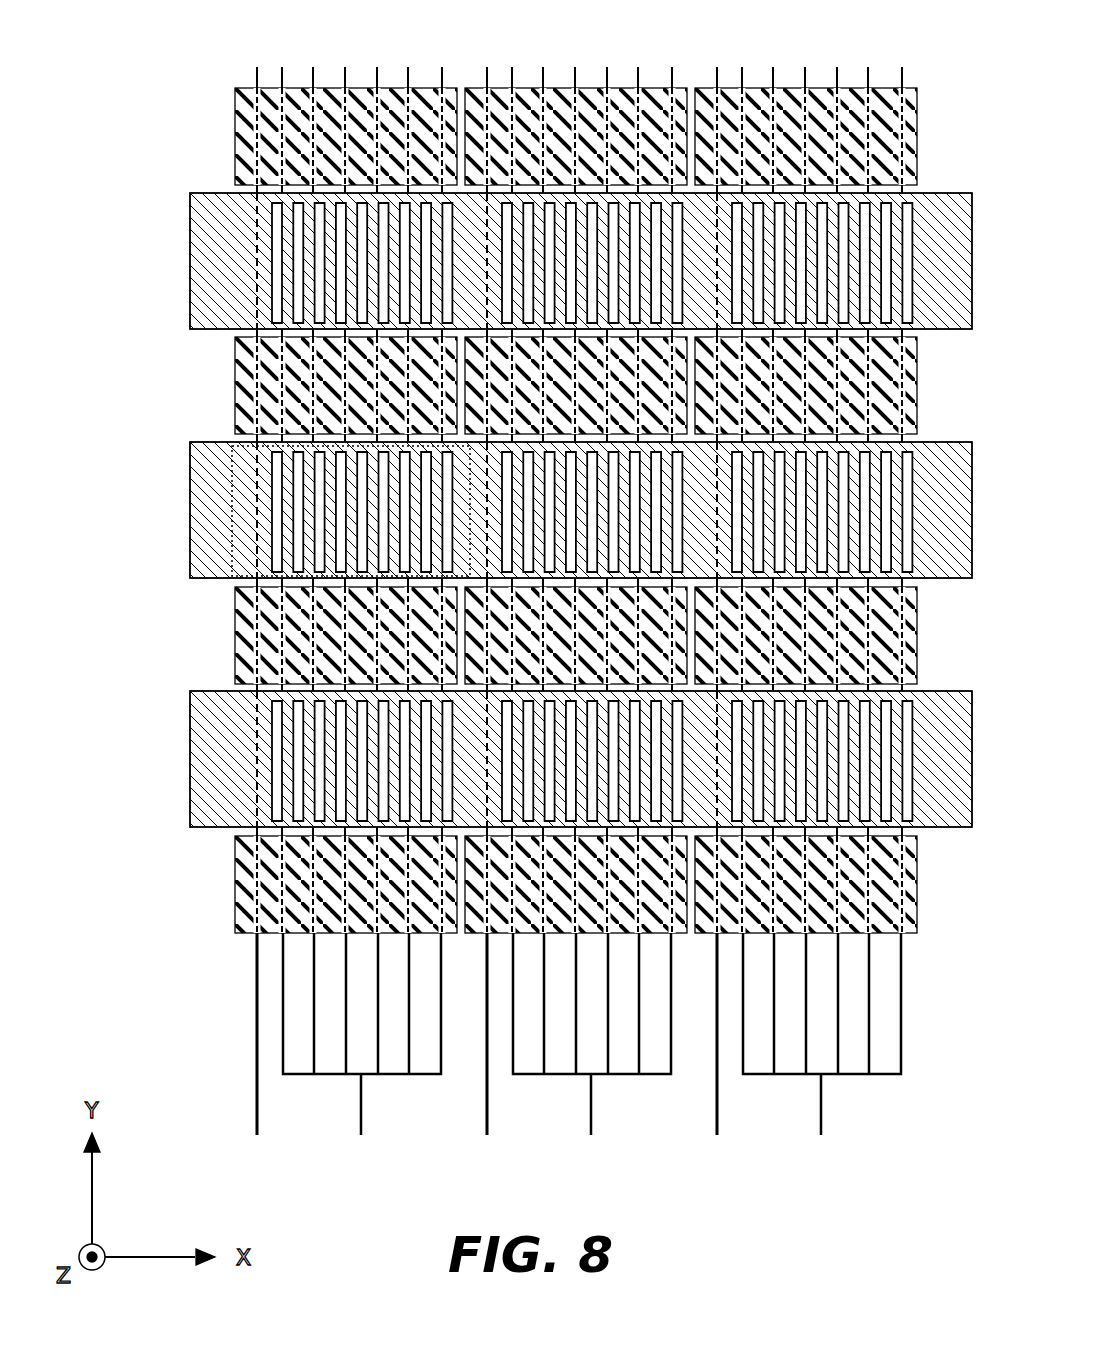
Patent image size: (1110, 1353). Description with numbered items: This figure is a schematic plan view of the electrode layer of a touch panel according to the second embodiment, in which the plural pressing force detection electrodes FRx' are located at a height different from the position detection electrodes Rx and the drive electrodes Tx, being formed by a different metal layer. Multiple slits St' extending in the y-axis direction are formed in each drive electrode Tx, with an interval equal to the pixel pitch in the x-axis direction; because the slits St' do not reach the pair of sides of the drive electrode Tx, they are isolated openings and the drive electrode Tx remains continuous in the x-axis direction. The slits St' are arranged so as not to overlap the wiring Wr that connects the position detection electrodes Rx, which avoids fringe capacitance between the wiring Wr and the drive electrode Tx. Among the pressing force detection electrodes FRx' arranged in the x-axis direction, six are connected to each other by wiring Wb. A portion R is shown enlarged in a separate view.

The position detection electrode Rx is at (238, 88).
The drive electrode Tx is at (190, 265).
The slit St' is at (527, 504).
The portion R is at (232, 452).
The pressing force detection electrode FRx' is at (537, 1003).
The wiring Wr is at (254, 1088).
The wiring Wb is at (325, 1080).